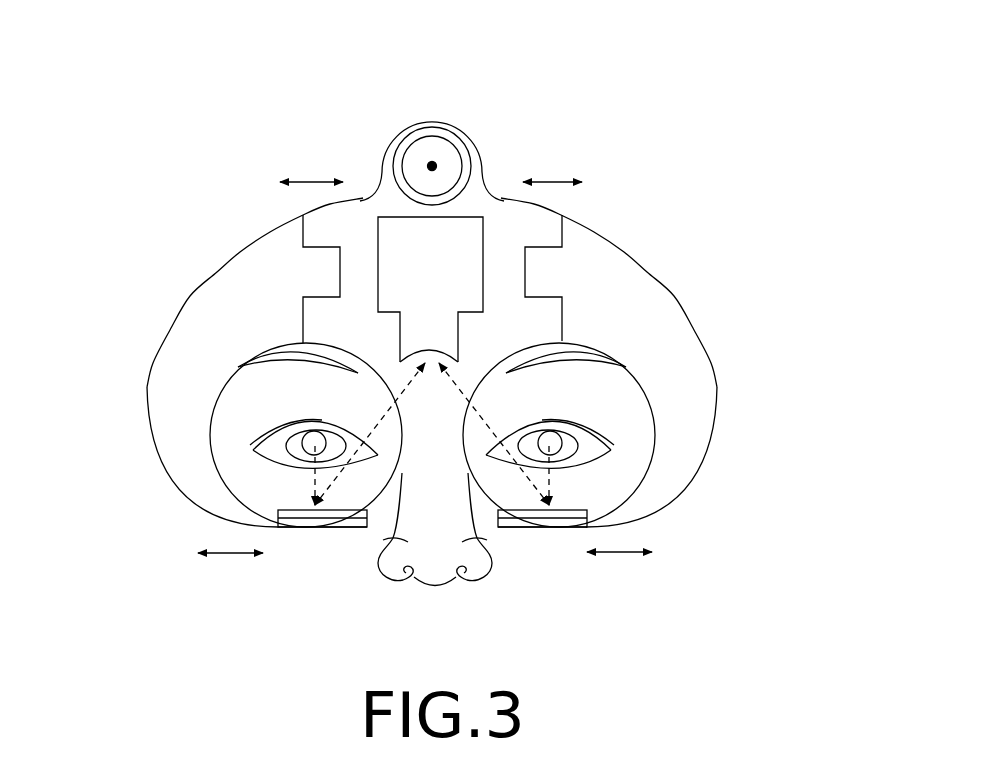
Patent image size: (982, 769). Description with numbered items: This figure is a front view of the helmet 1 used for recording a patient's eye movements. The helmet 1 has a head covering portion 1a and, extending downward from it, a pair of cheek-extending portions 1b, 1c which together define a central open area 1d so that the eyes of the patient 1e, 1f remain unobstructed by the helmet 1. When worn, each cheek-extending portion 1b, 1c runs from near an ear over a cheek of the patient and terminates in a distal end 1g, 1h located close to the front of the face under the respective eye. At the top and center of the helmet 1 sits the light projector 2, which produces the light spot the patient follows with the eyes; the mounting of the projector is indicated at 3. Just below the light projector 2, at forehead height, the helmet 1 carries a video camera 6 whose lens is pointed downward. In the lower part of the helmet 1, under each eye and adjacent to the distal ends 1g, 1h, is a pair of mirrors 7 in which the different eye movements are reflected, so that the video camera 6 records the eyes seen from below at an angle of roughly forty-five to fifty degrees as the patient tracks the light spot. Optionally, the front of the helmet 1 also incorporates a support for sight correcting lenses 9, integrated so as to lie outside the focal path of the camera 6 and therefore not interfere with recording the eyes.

The helmet 1 is at (610, 218).
The head covering portion 1a is at (622, 287).
The cheek-extending portion 1b is at (660, 495).
The cheek-extending portion 1c is at (212, 492).
The central open area 1d is at (457, 432).
The eye of the patient 1e is at (587, 445).
The eye of the patient 1f is at (283, 449).
The distal end 1g is at (520, 522).
The distal end 1h is at (330, 522).
The light projector 2 is at (486, 122).
The camera 3 is at (417, 158).
The video camera 6 is at (405, 267).
The mirrors 7 is at (292, 519).
The sight correcting lenses 9 is at (380, 483).